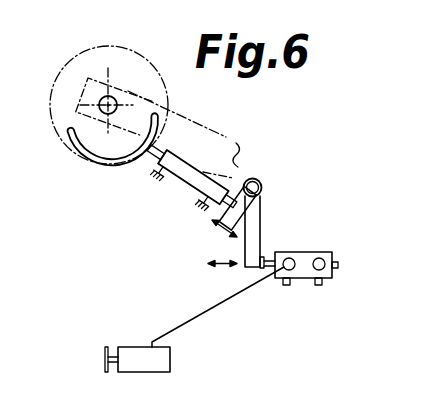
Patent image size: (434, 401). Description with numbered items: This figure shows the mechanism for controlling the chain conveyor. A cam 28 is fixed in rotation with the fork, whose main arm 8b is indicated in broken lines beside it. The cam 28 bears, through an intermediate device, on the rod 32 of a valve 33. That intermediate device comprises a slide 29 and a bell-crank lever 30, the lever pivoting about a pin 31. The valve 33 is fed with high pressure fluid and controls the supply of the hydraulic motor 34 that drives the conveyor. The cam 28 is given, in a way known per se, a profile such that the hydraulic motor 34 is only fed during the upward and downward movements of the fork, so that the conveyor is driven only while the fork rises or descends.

The main arm 8b is at (223, 128).
The cam 28 is at (94, 165).
The slide 29 is at (188, 179).
The bell-crank lever 30 is at (264, 214).
The pin 31 is at (262, 184).
The rod 32 is at (266, 257).
The valve 33 is at (311, 253).
The hydraulic motor 34 is at (141, 348).